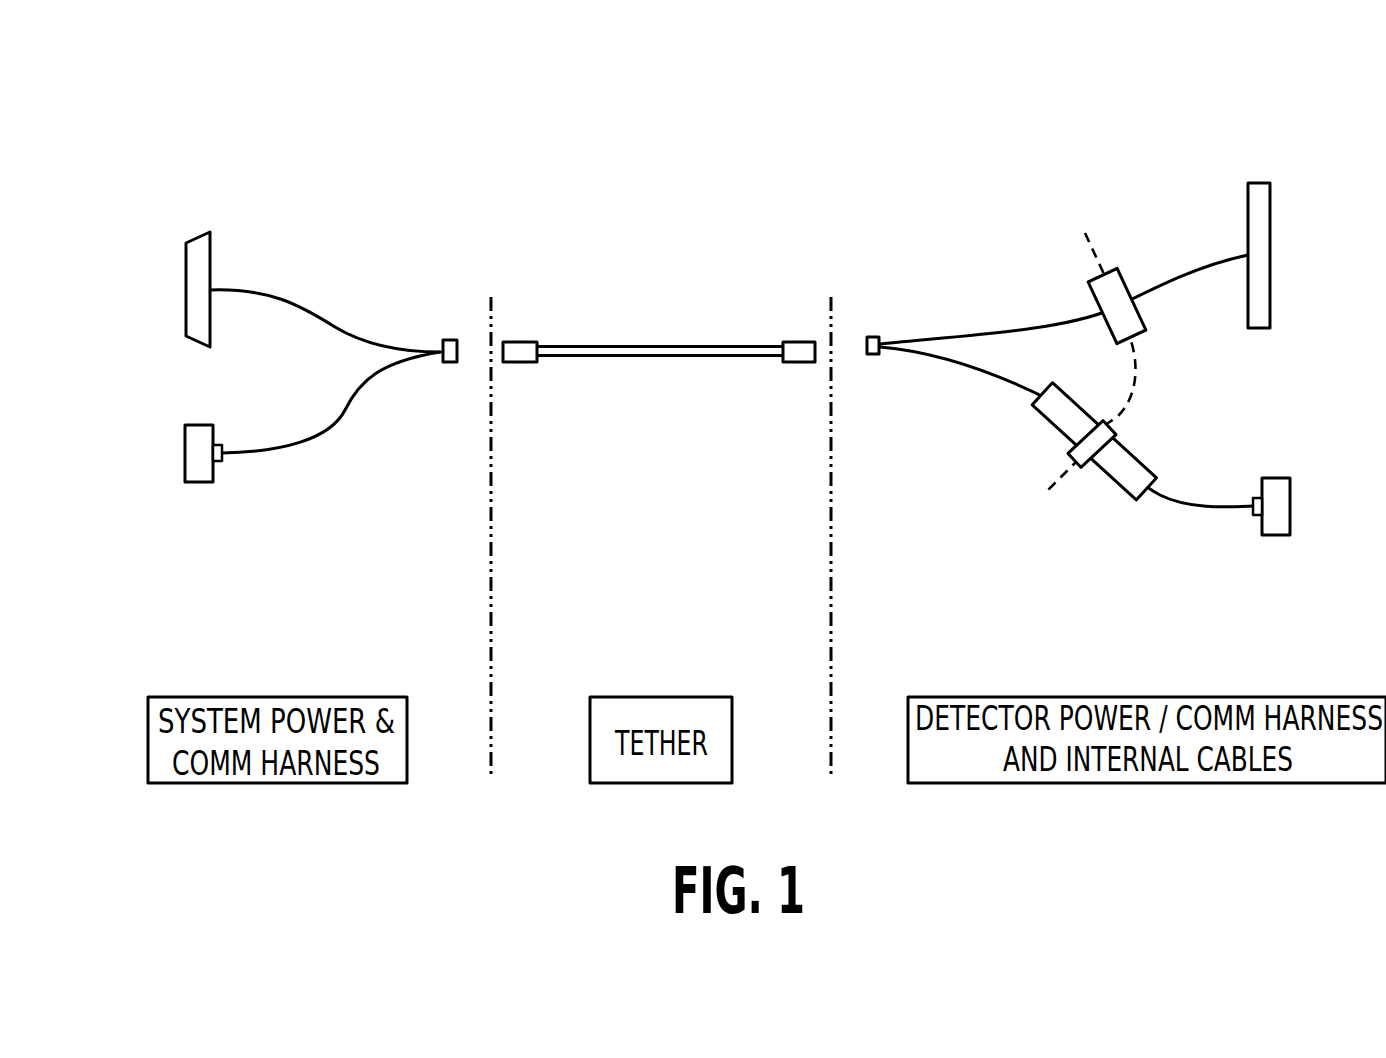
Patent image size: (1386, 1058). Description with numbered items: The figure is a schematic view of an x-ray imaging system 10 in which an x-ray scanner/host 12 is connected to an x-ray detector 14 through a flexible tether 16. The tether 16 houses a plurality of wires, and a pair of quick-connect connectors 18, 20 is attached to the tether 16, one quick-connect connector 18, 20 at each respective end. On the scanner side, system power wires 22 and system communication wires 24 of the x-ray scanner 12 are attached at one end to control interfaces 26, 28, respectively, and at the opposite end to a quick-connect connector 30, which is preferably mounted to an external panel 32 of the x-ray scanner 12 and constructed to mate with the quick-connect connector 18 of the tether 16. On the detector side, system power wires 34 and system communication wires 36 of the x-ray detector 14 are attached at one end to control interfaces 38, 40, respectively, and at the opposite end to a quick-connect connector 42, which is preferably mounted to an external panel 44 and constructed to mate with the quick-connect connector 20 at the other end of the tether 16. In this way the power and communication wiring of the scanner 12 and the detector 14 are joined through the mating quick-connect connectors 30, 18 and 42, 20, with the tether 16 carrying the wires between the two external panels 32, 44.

The x-ray imaging system 10 is at (922, 96).
The x-ray scanner/host 12 is at (284, 166).
The x-ray detector 14 is at (1158, 166).
The flexible tether 16 is at (622, 358).
The quick-connect connector 18 is at (518, 340).
The quick-connect connector 20 is at (800, 340).
The system power wires 22 is at (288, 452).
The system communication wires 24 is at (288, 300).
The control interface 26 is at (185, 452).
The control interface 28 is at (182, 290).
The quick-connect connector 30 is at (450, 340).
The external panel 32 is at (490, 580).
The system power wires 34 is at (962, 362).
The system communication wires 36 is at (1050, 318).
The control interface 38 is at (1291, 507).
The control interface 40 is at (1272, 218).
The quick-connect connector 42 is at (873, 356).
The external panel 44 is at (832, 563).